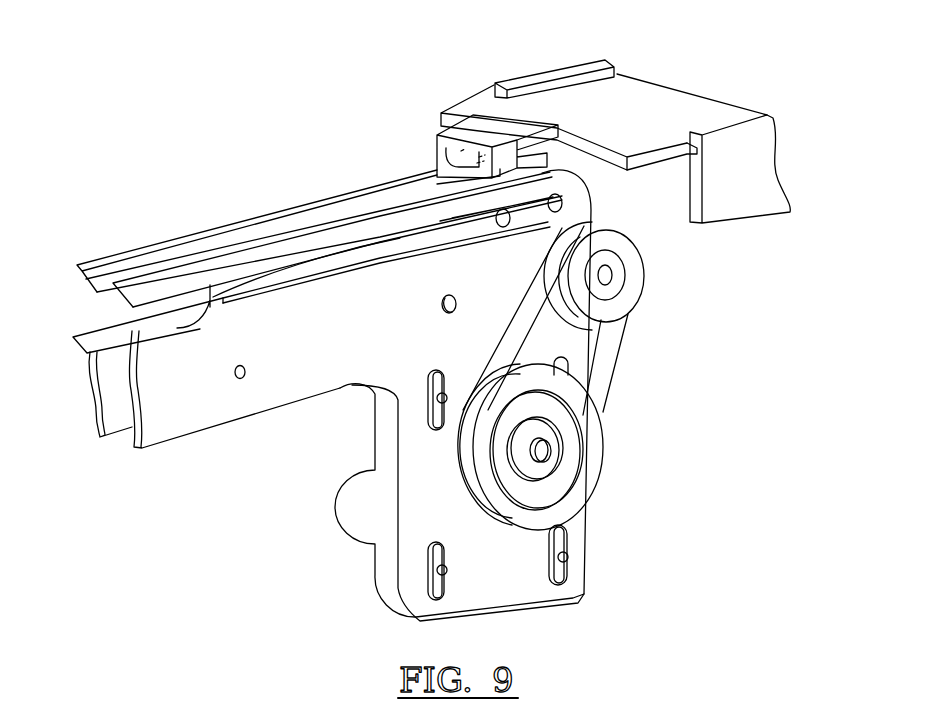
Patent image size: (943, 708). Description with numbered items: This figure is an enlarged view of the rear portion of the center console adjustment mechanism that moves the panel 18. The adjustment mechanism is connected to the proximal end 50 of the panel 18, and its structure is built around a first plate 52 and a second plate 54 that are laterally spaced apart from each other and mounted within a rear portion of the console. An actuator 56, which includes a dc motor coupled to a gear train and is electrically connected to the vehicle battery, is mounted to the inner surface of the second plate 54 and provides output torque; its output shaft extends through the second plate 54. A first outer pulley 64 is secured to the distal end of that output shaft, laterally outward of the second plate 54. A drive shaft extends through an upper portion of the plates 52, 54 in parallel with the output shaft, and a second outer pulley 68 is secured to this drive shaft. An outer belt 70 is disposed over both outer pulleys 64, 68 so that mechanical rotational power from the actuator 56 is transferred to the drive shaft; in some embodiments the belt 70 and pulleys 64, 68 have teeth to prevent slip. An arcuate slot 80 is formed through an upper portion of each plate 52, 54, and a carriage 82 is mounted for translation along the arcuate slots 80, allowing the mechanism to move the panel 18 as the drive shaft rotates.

The panel 18 is at (647, 110).
The proximal end 50 is at (525, 113).
The first plate 52 is at (108, 254).
The second plate 54 is at (176, 450).
The actuator 56 is at (337, 512).
The first outer pulley 64 is at (603, 468).
The second outer pulley 68 is at (645, 274).
The outer belt 70 is at (617, 362).
The arcuate slot 80 is at (177, 328).
The carriage 82 is at (436, 136).